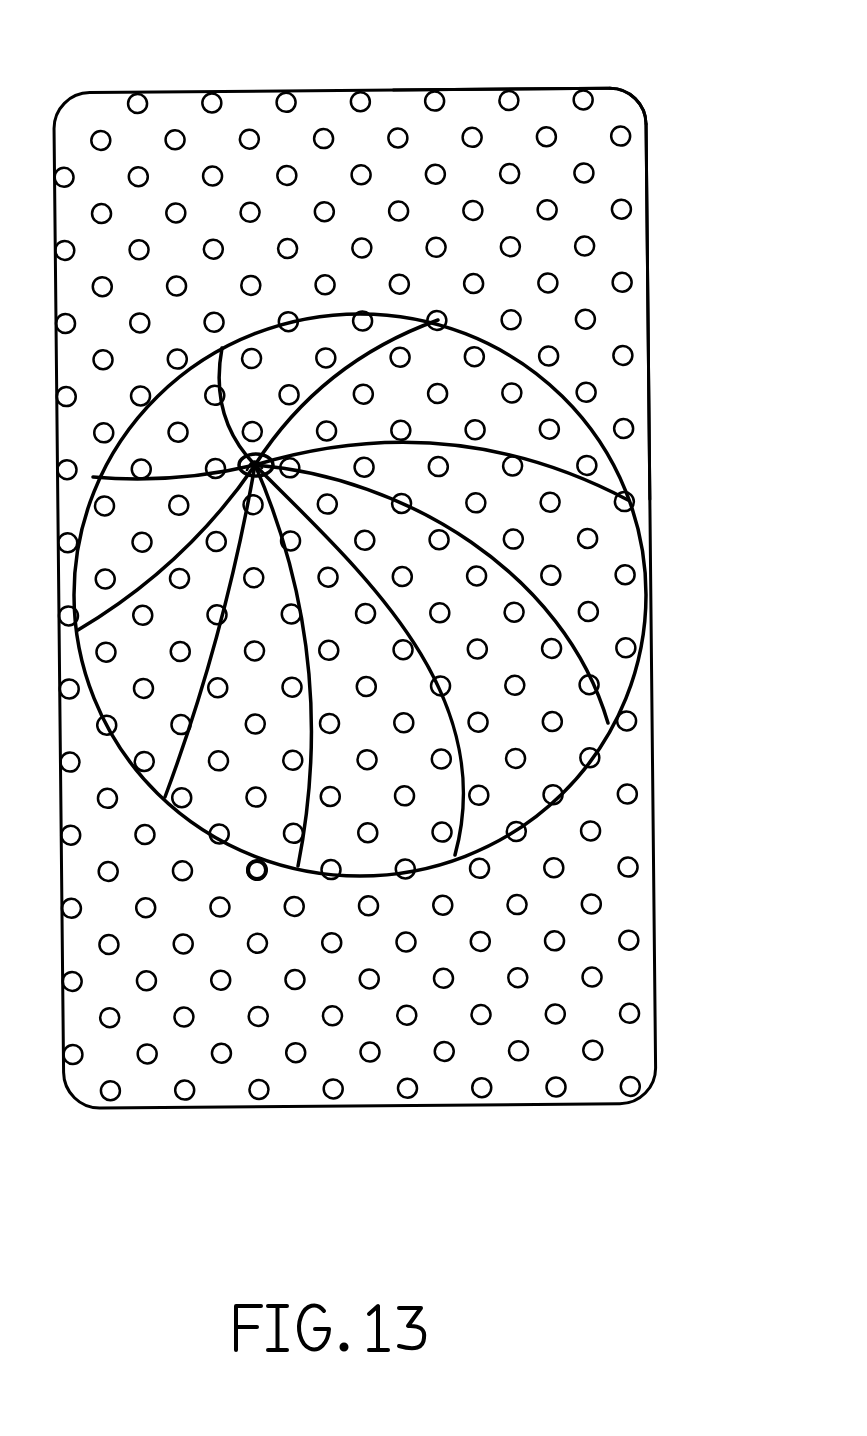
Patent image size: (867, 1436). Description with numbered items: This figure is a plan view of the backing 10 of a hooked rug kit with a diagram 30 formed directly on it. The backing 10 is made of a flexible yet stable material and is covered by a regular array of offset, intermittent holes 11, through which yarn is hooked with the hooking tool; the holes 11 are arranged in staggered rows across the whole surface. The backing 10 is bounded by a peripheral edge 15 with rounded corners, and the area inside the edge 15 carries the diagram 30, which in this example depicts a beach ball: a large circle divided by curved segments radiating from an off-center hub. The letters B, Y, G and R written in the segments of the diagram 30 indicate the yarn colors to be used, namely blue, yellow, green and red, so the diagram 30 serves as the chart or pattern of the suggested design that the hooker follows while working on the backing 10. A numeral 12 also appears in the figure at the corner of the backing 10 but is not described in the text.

The backing 10 is at (646, 180).
The holes 11 is at (598, 88).
The rounded corner edge 12 is at (615, 107).
The peripheral edge 15 is at (646, 240).
The diagram 30 is at (618, 462).